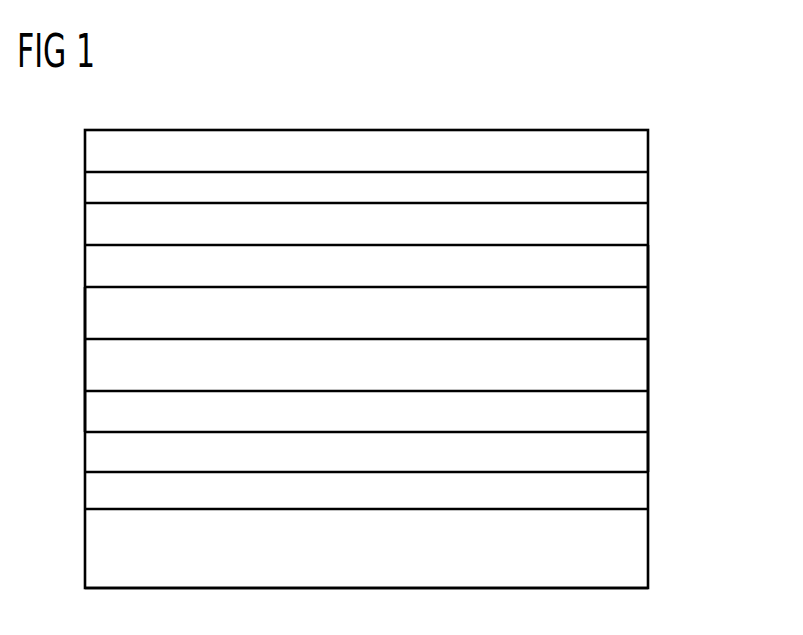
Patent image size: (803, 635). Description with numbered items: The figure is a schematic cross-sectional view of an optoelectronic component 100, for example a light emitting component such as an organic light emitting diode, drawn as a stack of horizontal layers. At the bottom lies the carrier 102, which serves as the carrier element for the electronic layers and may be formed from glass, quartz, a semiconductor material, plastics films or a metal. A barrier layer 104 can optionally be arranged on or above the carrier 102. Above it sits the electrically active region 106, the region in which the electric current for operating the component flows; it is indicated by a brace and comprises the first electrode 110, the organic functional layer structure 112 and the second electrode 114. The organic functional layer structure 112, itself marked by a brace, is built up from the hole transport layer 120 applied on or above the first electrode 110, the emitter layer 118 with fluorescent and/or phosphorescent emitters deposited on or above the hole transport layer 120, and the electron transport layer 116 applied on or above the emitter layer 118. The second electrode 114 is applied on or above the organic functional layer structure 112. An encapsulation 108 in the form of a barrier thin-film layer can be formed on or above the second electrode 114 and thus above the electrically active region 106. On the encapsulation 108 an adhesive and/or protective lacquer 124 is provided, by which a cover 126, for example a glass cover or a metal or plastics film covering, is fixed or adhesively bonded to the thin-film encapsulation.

The optoelectronic component 100 is at (668, 80).
The carrier 102 is at (638, 551).
The barrier layer 104 is at (93, 488).
The electrically active region 106 is at (723, 245).
The encapsulation 108 is at (93, 222).
The first electrode 110 is at (93, 452).
The organic functional layer structure 112 is at (75, 287).
The second electrode 114 is at (93, 259).
The electron transport layer 116 is at (638, 412).
The emitter layer 118 is at (638, 365).
The hole transport layer 120 is at (638, 317).
The adhesive and/or protective lacquer 124 is at (638, 186).
The cover 126 is at (638, 152).